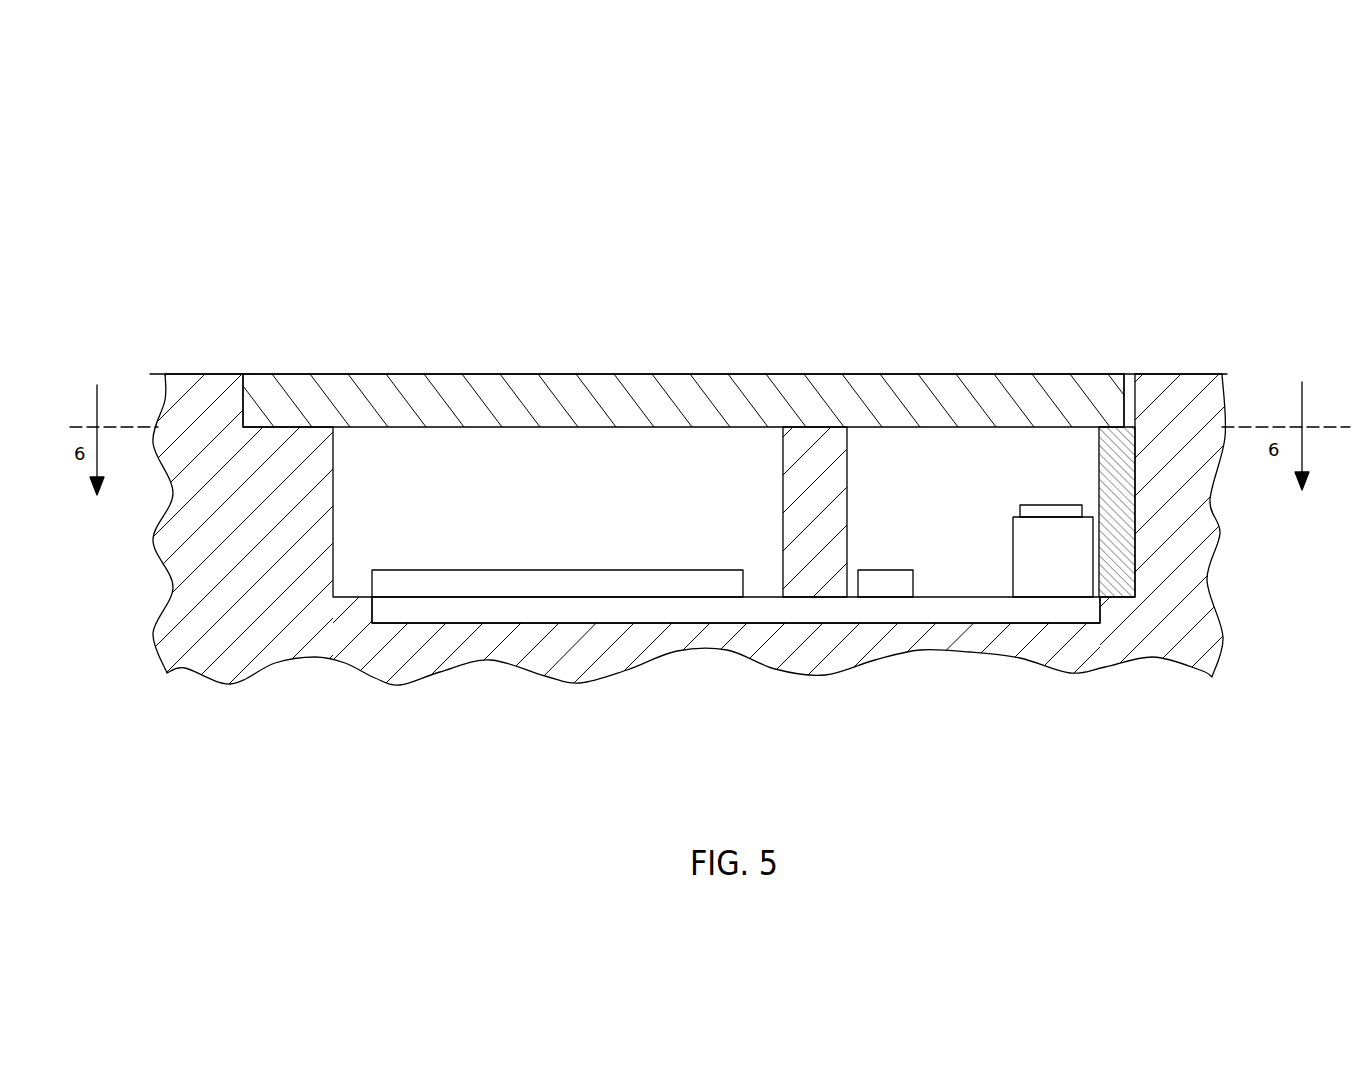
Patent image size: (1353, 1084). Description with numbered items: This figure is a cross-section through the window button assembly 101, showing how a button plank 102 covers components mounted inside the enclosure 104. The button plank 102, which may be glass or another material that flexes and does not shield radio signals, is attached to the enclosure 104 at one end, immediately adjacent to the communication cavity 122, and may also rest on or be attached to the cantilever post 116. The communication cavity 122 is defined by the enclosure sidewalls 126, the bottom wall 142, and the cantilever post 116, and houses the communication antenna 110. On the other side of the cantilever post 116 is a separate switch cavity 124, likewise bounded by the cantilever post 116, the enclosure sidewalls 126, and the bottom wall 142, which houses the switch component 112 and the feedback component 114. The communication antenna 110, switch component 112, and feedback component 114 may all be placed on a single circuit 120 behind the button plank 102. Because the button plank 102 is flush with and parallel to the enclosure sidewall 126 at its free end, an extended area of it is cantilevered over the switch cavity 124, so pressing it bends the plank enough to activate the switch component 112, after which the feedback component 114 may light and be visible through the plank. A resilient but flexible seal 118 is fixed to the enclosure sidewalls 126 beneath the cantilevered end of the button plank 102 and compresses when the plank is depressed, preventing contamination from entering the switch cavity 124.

The window button assembly 101 is at (1158, 240).
The button plank 102 is at (465, 397).
The enclosure 104 is at (214, 416).
The communication antenna 110 is at (505, 583).
The switch component 112 is at (1053, 572).
The feedback component 114 is at (893, 578).
The cantilever post 116 is at (818, 457).
The seal 118 is at (1120, 448).
The circuit 120 is at (684, 608).
The communication cavity 122 is at (618, 488).
The switch cavity 124 is at (987, 460).
The enclosure sidewalls 126 is at (331, 466).
The bottom wall 142 is at (347, 598).